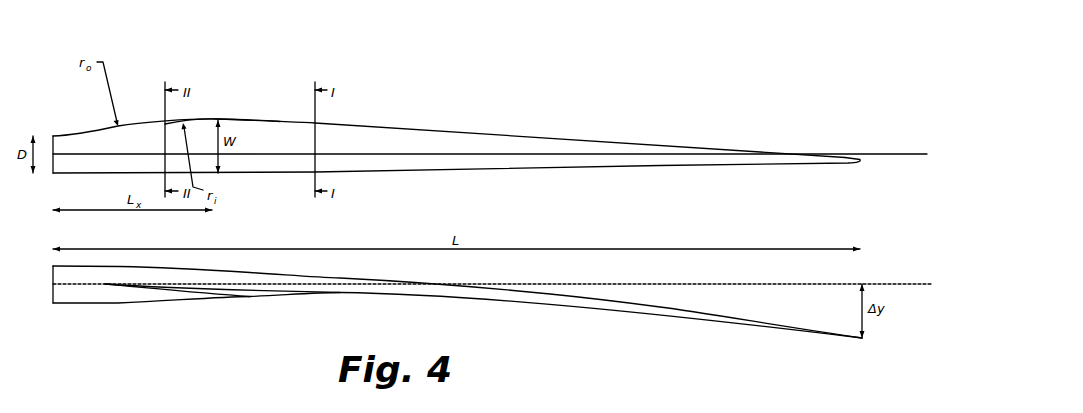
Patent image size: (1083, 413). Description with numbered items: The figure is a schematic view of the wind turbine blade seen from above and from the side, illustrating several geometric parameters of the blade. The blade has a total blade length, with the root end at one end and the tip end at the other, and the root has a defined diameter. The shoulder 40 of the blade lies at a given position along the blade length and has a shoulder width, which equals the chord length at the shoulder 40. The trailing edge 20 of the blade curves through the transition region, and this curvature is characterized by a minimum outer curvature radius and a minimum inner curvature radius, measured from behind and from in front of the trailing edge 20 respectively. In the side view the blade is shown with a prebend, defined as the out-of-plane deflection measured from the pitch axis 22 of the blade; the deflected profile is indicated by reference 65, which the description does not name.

The trailing edge 20 is at (341, 292).
The pitch axis 22 is at (373, 152).
The shoulder 40 is at (218, 120).
The deflected blade profile 65 is at (207, 292).